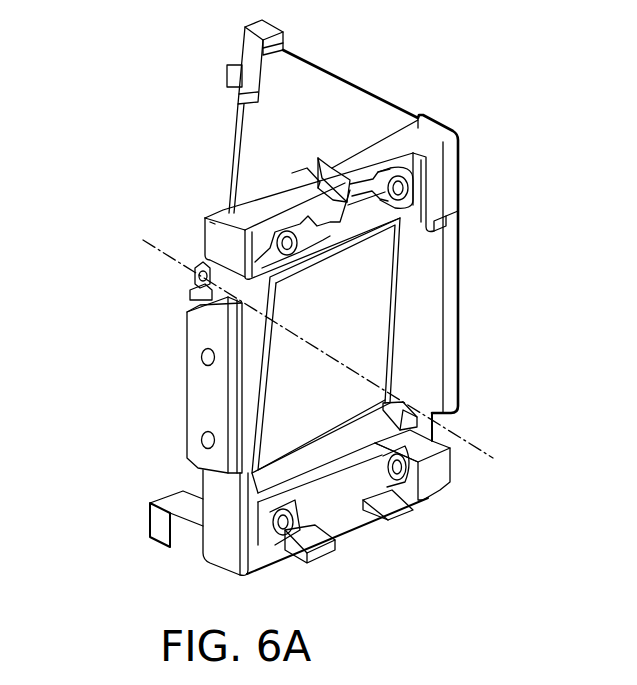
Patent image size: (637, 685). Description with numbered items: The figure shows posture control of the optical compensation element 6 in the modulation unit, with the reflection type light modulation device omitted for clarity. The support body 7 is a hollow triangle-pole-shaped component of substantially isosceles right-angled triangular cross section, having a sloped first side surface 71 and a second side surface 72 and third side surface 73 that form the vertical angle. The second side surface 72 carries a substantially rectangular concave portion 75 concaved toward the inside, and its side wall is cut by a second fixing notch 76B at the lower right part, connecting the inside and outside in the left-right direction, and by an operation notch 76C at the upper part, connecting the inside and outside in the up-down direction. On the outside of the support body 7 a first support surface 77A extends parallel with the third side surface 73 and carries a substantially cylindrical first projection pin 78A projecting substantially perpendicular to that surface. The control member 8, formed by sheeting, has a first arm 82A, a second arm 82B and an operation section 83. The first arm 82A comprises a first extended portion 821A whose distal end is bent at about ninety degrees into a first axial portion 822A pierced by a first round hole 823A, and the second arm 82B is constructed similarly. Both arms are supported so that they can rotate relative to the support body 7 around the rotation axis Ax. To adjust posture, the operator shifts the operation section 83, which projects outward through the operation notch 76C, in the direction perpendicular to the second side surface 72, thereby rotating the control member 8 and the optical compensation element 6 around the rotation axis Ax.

The support body 7 is at (323, 97).
The first side surface 71 is at (240, 100).
The operation notch 76C is at (290, 175).
The operation section 83 is at (342, 183).
The third side surface 73 is at (405, 117).
The second side surface 72 is at (413, 172).
The control member 8 is at (440, 224).
The optical compensation element 6 is at (380, 287).
The first support surface 77A is at (218, 242).
The first round hole 823A is at (197, 280).
The first projection pin 78A is at (200, 292).
The first arm 82A is at (134, 436).
The first axial portion 822A is at (190, 318).
The first extended portion 821A is at (248, 317).
The second fixing notch 76B is at (447, 425).
The rotation axis Ax is at (497, 458).
The second arm 82B is at (417, 422).
The concave portion 75 is at (313, 482).